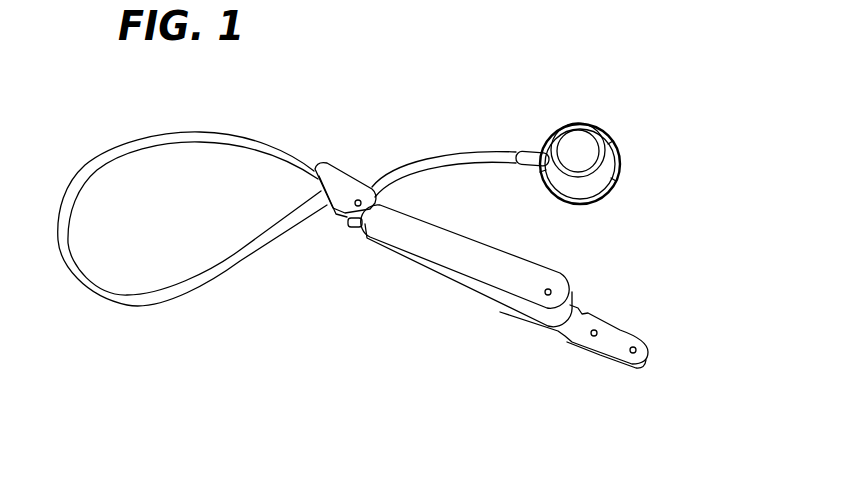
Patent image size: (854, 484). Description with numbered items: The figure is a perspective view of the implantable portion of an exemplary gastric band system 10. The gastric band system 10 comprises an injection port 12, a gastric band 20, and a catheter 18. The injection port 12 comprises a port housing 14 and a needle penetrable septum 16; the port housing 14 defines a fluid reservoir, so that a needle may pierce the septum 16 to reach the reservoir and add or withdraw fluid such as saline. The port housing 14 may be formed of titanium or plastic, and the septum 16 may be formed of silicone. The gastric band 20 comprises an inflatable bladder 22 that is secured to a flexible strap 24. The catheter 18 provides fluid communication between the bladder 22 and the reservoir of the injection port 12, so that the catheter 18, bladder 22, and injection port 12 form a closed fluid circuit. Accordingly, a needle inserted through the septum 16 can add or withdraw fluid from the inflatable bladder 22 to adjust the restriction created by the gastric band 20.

The gastric band system 10 is at (349, 98).
The injection port 12 is at (637, 164).
The port housing 14 is at (595, 139).
The needle penetrable septum 16 is at (577, 146).
The catheter 18 is at (90, 160).
The gastric band 20 is at (405, 282).
The inflatable bladder 22 is at (467, 284).
The flexible strap 24 is at (610, 340).